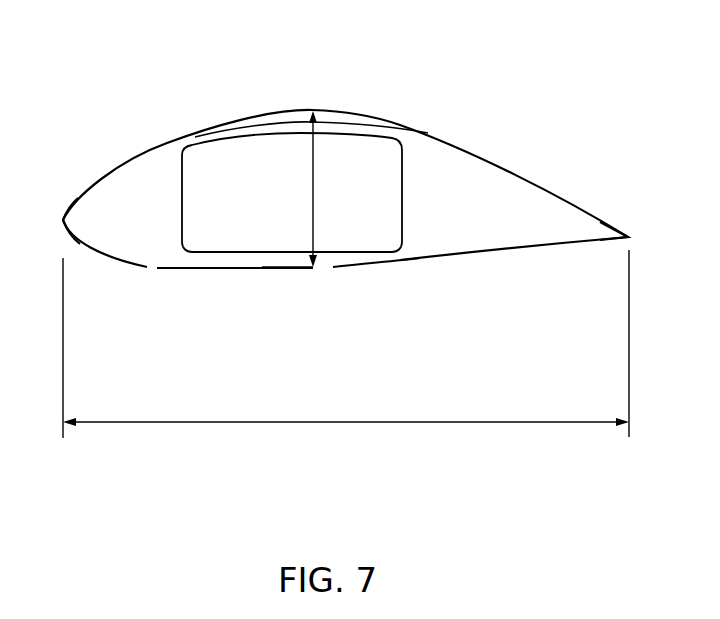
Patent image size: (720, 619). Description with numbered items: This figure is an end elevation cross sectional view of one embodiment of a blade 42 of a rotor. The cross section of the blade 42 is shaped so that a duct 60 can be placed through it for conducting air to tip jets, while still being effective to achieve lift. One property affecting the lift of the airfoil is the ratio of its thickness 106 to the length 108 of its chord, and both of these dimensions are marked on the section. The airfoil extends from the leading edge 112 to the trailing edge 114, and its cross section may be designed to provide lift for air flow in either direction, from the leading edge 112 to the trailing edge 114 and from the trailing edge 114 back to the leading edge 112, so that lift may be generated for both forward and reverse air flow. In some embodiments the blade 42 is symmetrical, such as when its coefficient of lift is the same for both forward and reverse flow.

The blade 42 is at (410, 58).
The duct 60 is at (282, 202).
The thickness 106 is at (313, 175).
The length of the chord 108 is at (342, 422).
The leading edge 112 is at (63, 220).
The trailing edge 114 is at (630, 238).